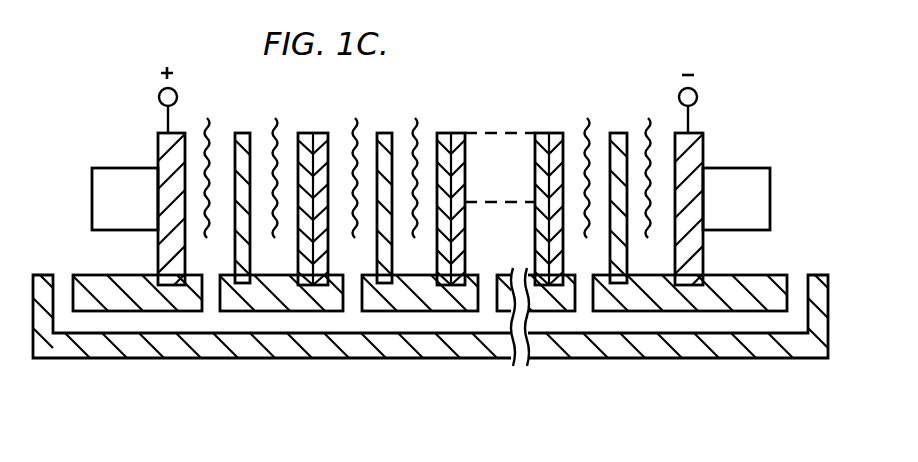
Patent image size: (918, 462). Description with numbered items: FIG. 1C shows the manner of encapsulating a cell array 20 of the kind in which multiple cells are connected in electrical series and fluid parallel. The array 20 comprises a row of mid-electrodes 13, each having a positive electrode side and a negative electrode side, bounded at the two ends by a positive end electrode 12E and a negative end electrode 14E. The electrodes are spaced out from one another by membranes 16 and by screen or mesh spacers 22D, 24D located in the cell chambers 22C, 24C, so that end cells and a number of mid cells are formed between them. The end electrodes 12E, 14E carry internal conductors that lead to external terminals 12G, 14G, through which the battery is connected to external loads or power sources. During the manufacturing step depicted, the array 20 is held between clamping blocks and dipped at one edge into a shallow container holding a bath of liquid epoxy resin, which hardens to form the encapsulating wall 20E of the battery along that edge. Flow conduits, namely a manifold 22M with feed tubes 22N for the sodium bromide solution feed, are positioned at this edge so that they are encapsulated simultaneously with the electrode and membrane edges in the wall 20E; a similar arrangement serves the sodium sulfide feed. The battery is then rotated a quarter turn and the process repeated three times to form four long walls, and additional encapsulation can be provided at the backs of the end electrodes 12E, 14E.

The external terminal 12G is at (159, 98).
The end electrode 12E is at (158, 150).
The screen or mesh spacer 22D is at (212, 164).
The membrane 16 is at (243, 132).
The screen or mesh spacer 24D is at (281, 166).
The mid-electrode 13 is at (311, 130).
The cell array 20 is at (507, 90).
The external terminal 14G is at (698, 95).
The end electrode 14E is at (697, 152).
The cell chamber 22C is at (198, 253).
The manifold 22M is at (105, 320).
The feed tube 22N is at (209, 305).
The cell chamber 24C is at (268, 258).
The enclosure body 20E is at (408, 350).